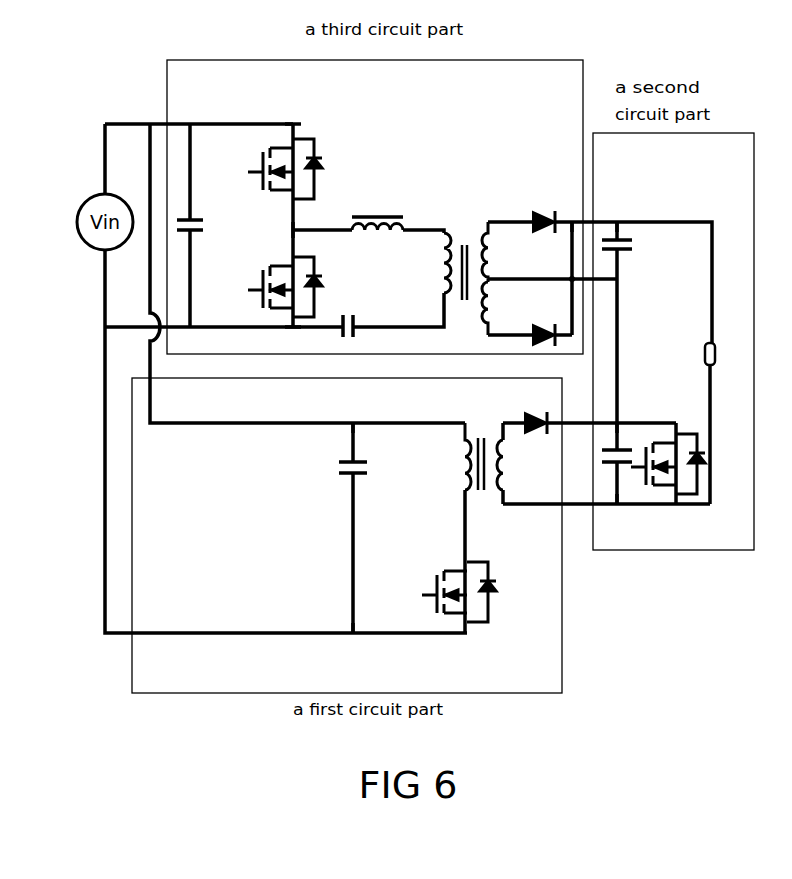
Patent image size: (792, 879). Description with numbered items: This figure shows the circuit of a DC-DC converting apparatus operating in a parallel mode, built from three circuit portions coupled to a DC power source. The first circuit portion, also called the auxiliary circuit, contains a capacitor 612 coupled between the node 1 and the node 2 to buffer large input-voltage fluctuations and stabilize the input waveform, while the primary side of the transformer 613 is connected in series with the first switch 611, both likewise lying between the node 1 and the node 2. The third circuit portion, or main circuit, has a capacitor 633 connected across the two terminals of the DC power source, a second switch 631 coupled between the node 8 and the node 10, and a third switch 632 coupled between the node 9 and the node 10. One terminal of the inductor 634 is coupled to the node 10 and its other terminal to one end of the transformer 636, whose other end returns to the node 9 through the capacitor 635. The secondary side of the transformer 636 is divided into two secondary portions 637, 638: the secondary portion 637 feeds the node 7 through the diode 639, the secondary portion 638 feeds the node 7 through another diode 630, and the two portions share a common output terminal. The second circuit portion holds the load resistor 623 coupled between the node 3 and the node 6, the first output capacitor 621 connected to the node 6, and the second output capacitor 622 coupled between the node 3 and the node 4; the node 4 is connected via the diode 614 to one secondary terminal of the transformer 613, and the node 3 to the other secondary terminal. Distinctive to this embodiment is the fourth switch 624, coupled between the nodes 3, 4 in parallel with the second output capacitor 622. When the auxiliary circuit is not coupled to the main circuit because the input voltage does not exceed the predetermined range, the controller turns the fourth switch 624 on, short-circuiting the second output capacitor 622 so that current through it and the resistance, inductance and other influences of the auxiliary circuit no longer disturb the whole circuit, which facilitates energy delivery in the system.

The switch Q1 611 is at (476, 592).
The capacitor 612 is at (371, 467).
The transformer 613 is at (465, 456).
The diode 614 is at (533, 437).
The capacitor C1 621 is at (633, 259).
The capacitor C2 622 is at (606, 457).
The load resistor 623 is at (726, 354).
The switch Q4 624 is at (687, 468).
The diode 630 is at (543, 324).
The switch Q2 631 is at (300, 169).
The switch Q3 632 is at (300, 287).
The capacitor 633 is at (207, 225).
The inductor 634 is at (377, 211).
The capacitor 635 is at (364, 335).
The transformer 636 is at (437, 266).
The secondary portion 637 is at (501, 252).
The secondary portion 638 is at (501, 308).
The diode 639 is at (538, 212).
The node 1 is at (355, 416).
The node 2 is at (355, 642).
The node 3 is at (613, 514).
The node 4 is at (624, 418).
The node 6 is at (615, 214).
The node 7 is at (571, 214).
The node 8 is at (293, 112).
The node 9 is at (293, 338).
The node 10 is at (274, 231).